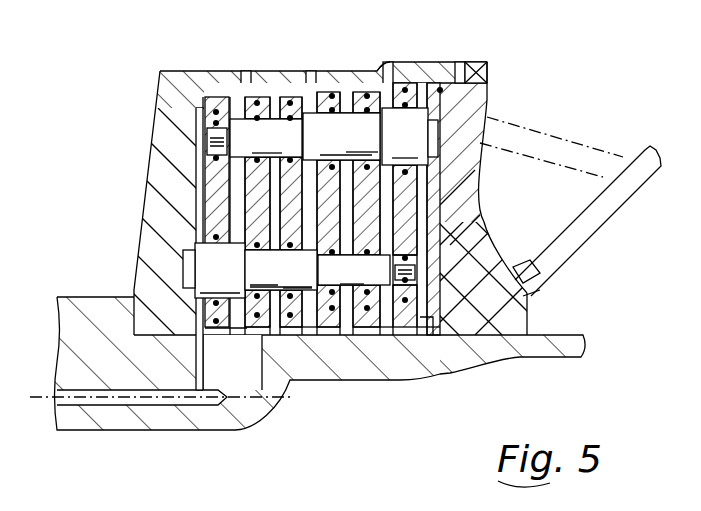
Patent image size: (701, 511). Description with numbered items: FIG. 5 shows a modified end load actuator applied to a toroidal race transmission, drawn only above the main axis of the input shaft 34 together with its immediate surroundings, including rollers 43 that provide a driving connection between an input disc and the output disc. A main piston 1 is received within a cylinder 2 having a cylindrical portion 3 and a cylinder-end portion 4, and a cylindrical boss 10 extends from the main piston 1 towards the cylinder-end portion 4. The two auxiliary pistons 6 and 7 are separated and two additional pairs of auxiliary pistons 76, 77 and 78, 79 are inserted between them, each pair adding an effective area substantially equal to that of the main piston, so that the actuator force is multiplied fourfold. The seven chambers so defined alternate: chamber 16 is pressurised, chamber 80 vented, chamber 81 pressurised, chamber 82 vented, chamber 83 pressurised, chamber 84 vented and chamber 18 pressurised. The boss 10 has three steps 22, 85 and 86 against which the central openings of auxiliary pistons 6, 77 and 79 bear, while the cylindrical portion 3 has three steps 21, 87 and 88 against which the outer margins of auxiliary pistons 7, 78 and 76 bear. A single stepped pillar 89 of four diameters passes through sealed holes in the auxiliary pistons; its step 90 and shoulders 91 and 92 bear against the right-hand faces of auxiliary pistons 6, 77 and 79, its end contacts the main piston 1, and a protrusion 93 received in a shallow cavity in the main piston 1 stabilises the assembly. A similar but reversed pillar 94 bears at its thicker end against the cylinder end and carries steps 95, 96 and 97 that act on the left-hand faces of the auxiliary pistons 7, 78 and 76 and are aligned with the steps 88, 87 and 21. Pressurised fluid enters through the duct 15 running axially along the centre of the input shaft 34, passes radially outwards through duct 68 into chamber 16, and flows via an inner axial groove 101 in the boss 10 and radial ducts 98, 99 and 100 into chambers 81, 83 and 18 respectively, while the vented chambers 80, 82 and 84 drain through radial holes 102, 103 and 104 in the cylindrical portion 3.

The main piston 1 is at (474, 62).
The cylinder 2 is at (147, 73).
The cylindrical portion 3 is at (455, 60).
The cylinder-end portion 4 is at (163, 105).
The auxiliary piston 6 is at (238, 196).
The auxiliary piston 7 is at (530, 265).
The cylindrical boss 10 is at (287, 310).
The duct 15 is at (161, 405).
The chamber 16 is at (200, 140).
The chamber 18 is at (425, 250).
The step 21 is at (410, 62).
The step 22 is at (257, 393).
The input shaft 34 is at (450, 358).
The rollers 43 is at (570, 233).
The duct 68 is at (209, 380).
The auxiliary piston 76 is at (252, 200).
The auxiliary piston 77 is at (275, 210).
The auxiliary piston 78 is at (430, 198).
The auxiliary piston 79 is at (425, 222).
The vented chamber 80 is at (215, 172).
The pressurised chamber 81 is at (220, 192).
The vented chamber 82 is at (310, 228).
The pressurised chamber 83 is at (462, 172).
The vented chamber 84 is at (472, 337).
The step 85 is at (312, 323).
The step 86 is at (392, 313).
The step 87 is at (328, 92).
The step 88 is at (247, 71).
The stepped pillar 89 is at (361, 137).
The step 90 is at (266, 138).
The shoulder 91 is at (341, 137).
The shoulder 92 is at (410, 136).
The protrusion 93 is at (488, 86).
The pillar 94 is at (281, 270).
The step 95 is at (354, 272).
The step 96 is at (297, 279).
The step 97 is at (214, 270).
The radial duct 98 is at (265, 335).
The radial duct 99 is at (343, 326).
The radial duct 100 is at (433, 335).
The inner axial groove 101 is at (370, 335).
The radial hole 102 is at (246, 96).
The radial hole 103 is at (309, 80).
The radial hole 104 is at (378, 69).